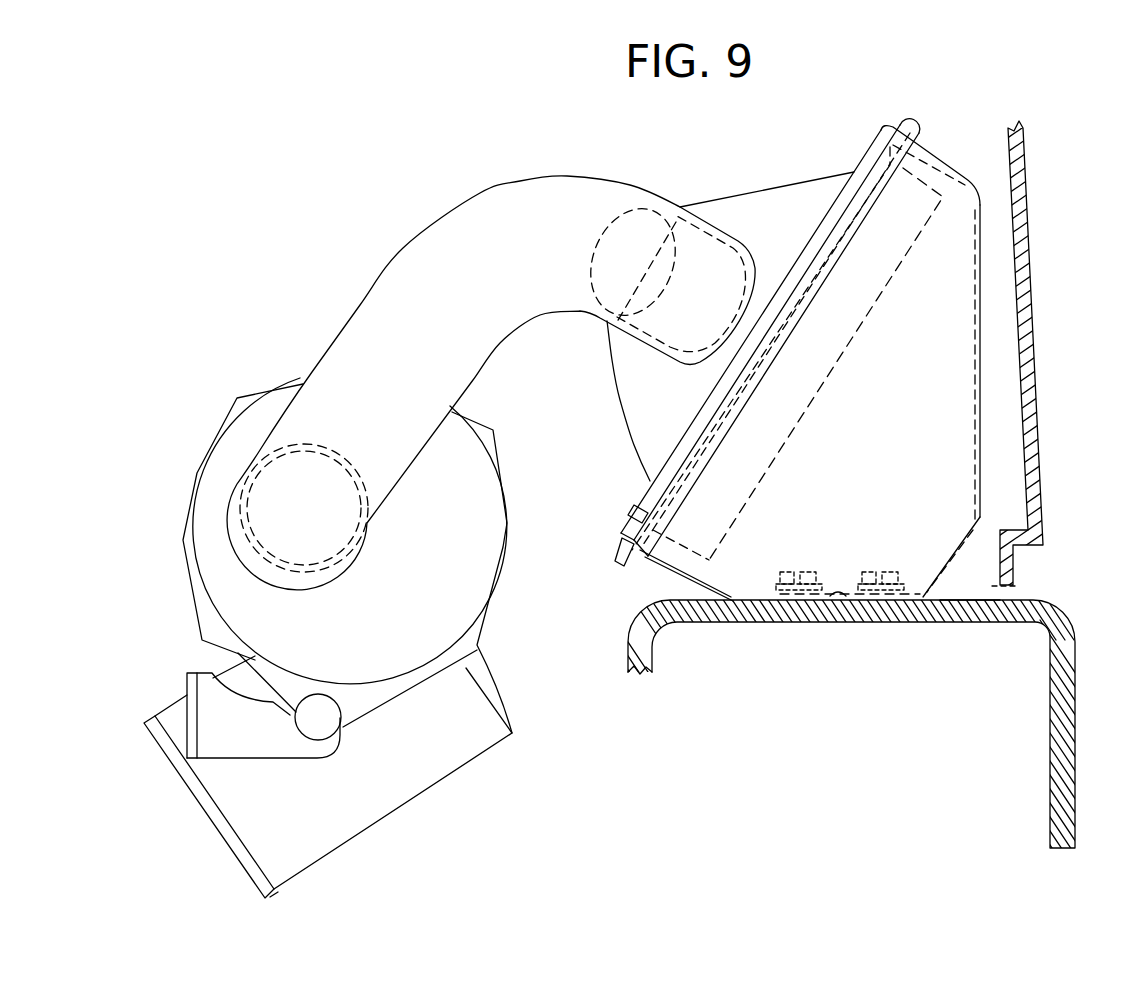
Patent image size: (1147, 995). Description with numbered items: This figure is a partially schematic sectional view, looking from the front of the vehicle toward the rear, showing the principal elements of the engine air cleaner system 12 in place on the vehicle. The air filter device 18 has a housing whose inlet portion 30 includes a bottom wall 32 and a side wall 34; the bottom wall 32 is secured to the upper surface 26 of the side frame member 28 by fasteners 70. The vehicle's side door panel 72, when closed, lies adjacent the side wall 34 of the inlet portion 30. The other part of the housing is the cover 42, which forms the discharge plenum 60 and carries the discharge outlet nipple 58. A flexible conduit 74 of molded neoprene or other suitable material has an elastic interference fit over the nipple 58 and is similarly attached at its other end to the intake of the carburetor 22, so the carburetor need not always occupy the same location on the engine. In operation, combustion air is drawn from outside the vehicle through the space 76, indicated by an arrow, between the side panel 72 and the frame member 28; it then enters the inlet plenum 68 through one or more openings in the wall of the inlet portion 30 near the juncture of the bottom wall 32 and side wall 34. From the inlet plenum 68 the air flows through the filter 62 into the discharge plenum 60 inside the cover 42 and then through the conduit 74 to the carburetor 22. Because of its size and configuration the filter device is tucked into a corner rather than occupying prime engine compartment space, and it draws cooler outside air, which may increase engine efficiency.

The engine air cleaner system 12 is at (554, 140).
The air filter device 18 is at (638, 481).
The carburetor 22 is at (205, 514).
The upper surface 26 is at (976, 598).
The side frame member 28 is at (1072, 722).
The inlet portion 30 is at (662, 566).
The bottom wall 32 is at (838, 600).
The side wall 34 is at (983, 358).
The cover 42 is at (616, 383).
The nipple connector 58 is at (695, 233).
The discharge plenum 60 is at (656, 404).
The filter 62 is at (865, 290).
The inlet plenum 68 is at (894, 392).
The fasteners 70 is at (882, 575).
The side door panel 72 is at (1028, 262).
The flexible conduit 74 is at (410, 250).
The space 76 is at (1017, 592).